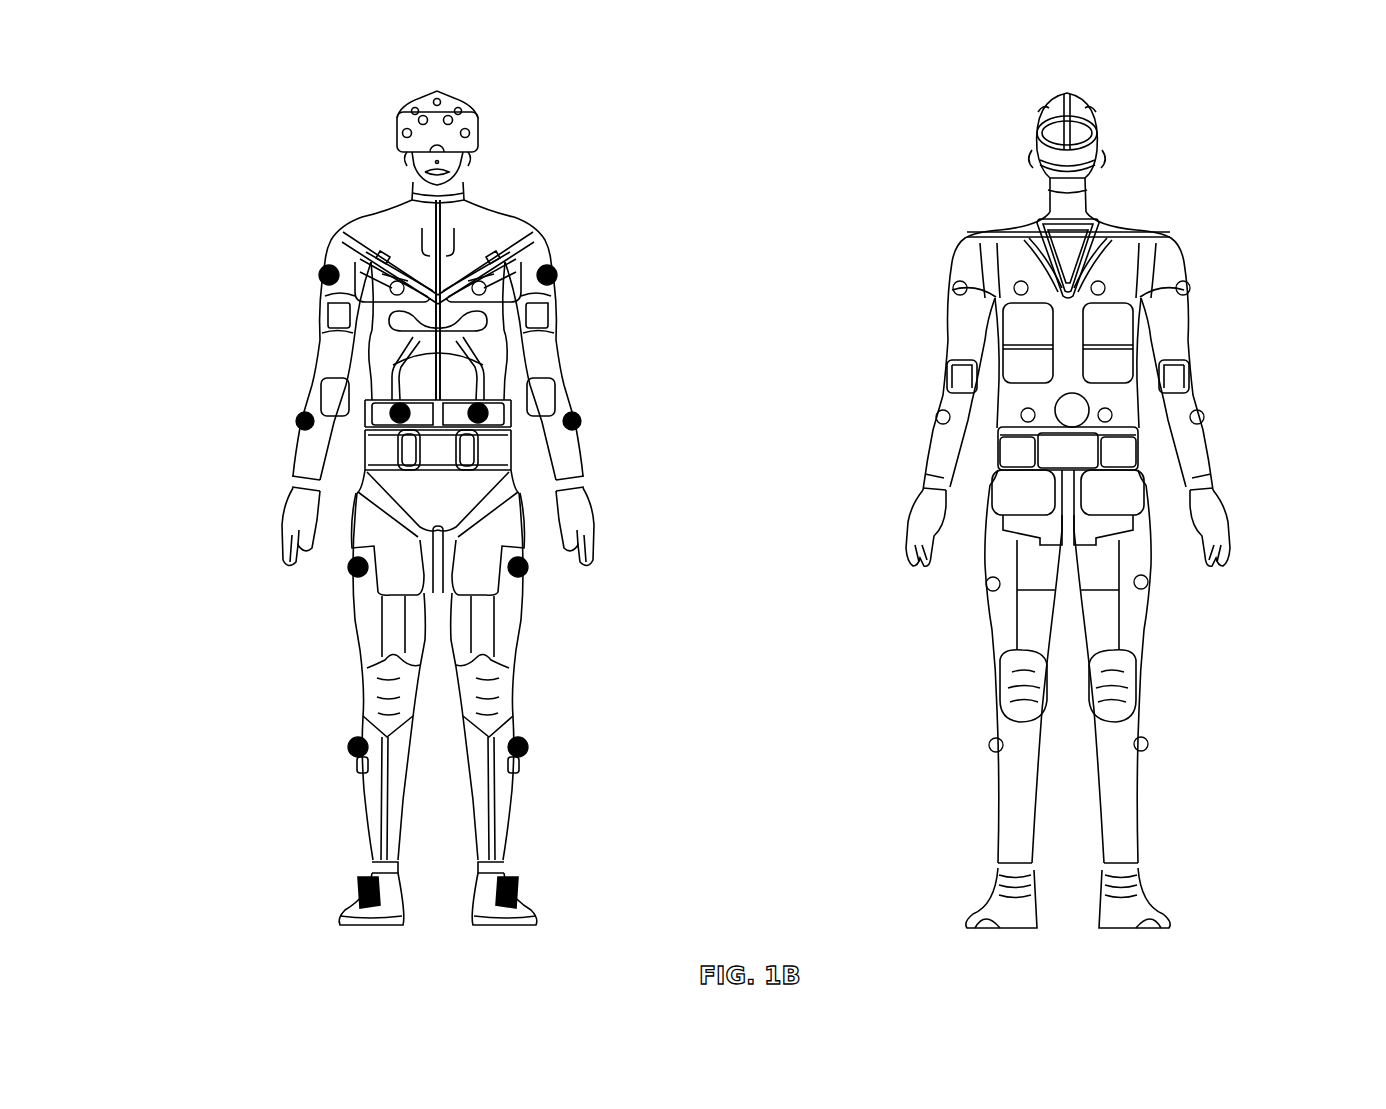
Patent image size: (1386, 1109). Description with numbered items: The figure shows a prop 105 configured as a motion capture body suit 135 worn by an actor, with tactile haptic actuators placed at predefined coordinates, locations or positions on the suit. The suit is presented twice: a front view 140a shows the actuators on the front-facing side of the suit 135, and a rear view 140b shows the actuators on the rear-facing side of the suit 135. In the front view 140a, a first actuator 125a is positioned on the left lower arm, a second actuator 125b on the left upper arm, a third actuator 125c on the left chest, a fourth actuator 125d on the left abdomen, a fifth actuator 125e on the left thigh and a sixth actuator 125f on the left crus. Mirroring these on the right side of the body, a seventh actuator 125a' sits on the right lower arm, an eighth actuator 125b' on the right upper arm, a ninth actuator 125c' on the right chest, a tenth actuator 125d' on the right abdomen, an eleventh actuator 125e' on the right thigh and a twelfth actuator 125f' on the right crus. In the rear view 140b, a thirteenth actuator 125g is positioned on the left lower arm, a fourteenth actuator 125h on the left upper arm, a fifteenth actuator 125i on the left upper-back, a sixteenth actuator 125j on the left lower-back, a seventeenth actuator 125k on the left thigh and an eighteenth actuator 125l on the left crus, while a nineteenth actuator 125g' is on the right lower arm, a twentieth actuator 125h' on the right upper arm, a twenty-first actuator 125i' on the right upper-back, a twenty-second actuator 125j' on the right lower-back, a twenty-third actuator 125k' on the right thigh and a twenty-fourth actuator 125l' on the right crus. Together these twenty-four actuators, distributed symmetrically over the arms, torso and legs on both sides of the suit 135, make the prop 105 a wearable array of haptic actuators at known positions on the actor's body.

The prop 105 is at (797, 90).
The mocap body suit 135 is at (313, 120).
The front view 140a is at (458, 970).
The rear view 140b is at (1088, 970).
The first actuator 125a is at (298, 415).
The seventh actuator 125a' is at (618, 412).
The second actuator 125b is at (320, 270).
The eighth actuator 125b' is at (595, 266).
The third actuator 125c is at (397, 281).
The ninth actuator 125c' is at (552, 240).
The fourth actuator 125d is at (400, 402).
The tenth actuator 125d' is at (557, 382).
The fifth actuator 125e is at (350, 572).
The eleventh actuator 125e' is at (565, 579).
The sixth actuator 125f is at (350, 752).
The twelfth actuator 125f' is at (562, 758).
The thirteenth actuator 125g is at (938, 413).
The nineteenth actuator 125g' is at (1243, 399).
The fourteenth actuator 125h is at (953, 283).
The twentieth actuator 125h' is at (1227, 277).
The fifteenth actuator 125i is at (1021, 280).
The twenty-first actuator 125i' is at (1166, 241).
The sixteenth actuator 125j is at (1021, 417).
The twenty-second actuator 125j' is at (1191, 439).
The seventeenth actuator 125k is at (987, 589).
The twenty-third actuator 125k' is at (1184, 596).
The eighteenth actuator 125l is at (990, 750).
The twenty-fourth actuator 125l' is at (1181, 759).